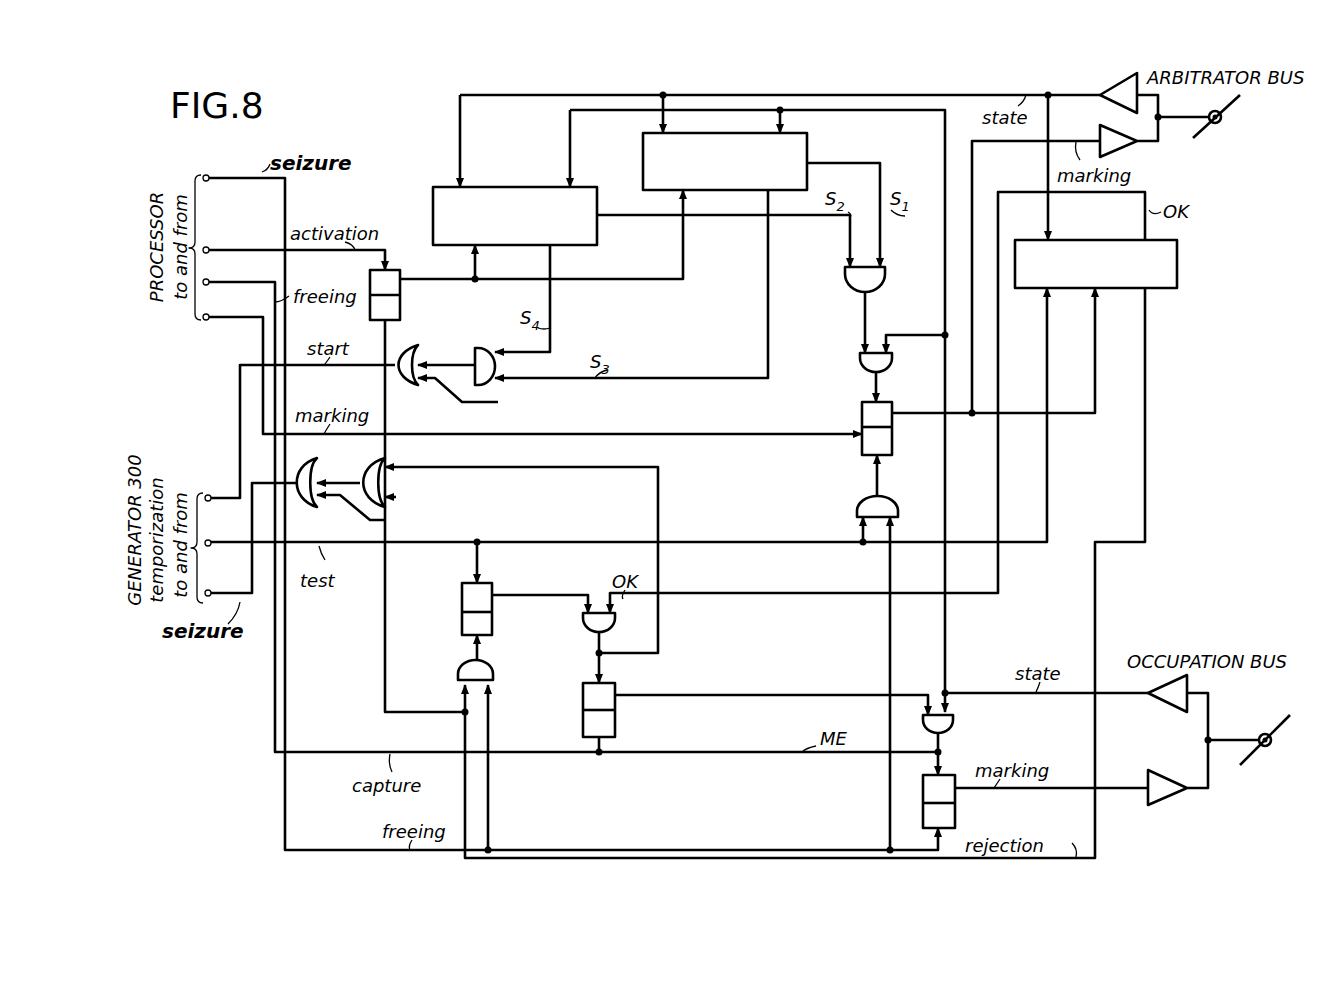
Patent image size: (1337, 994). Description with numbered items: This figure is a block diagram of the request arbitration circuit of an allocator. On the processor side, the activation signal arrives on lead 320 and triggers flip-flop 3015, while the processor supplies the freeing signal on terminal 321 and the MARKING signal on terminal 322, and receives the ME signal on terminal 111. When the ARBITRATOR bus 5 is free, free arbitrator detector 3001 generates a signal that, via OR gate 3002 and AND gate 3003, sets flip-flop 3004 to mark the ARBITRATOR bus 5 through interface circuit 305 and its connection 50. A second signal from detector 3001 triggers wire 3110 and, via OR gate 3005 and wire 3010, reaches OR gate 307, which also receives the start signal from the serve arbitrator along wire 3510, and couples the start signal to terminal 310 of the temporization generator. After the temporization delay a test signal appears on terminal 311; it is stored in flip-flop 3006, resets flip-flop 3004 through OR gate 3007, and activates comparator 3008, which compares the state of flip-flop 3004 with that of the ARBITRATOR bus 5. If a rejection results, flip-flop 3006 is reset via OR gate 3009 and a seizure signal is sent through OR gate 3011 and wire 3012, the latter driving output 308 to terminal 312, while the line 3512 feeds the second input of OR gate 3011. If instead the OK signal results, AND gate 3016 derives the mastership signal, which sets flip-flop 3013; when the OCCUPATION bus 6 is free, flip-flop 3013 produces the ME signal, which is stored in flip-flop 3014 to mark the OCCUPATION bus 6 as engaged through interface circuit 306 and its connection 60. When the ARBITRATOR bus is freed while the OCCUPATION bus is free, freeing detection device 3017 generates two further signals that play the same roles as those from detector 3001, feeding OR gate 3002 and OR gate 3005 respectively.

The terminal 111 is at (207, 178).
The lead 320 is at (202, 250).
The freeing line from processor 321 is at (202, 282).
The terminal 322 is at (202, 317).
The terminal 310 is at (204, 498).
The terminal 311 is at (206, 543).
The terminal 312 is at (206, 593).
The free arbitrator detector 3001 is at (812, 151).
The OR gate 3002 is at (845, 285).
The AND gate 3003 is at (861, 369).
The flip-flop 3004 is at (861, 420).
The OR gate 3005 is at (494, 363).
The flip-flop 3006 is at (462, 614).
The OR gate 3007 is at (859, 502).
The comparator 3008 is at (1092, 240).
The OR gate 3009 is at (493, 674).
The wire 3010 is at (443, 365).
The OR gate 3011 is at (383, 486).
The wire 3012 is at (333, 483).
The flip-flop 3013 is at (616, 724).
The flip-flop 3014 is at (956, 814).
The flip-flop 3015 is at (400, 294).
The AND gate 3016 is at (582, 624).
The freeing detection device 3017 is at (500, 186).
The wire 3110 is at (766, 319).
The wire 3510 is at (498, 404).
The input line of gate 3012 3512 is at (386, 521).
The OR gate 307 is at (408, 388).
The seizure output 308 is at (303, 504).
The interface circuit 305 is at (1106, 128).
The interface circuit 306 is at (1164, 770).
The arbitrator bus connection 50 is at (1206, 116).
The ARBITRATOR bus 5 is at (1233, 112).
The occupation bus connection 60 is at (1258, 735).
The OCCUPATION bus 6 is at (1280, 748).